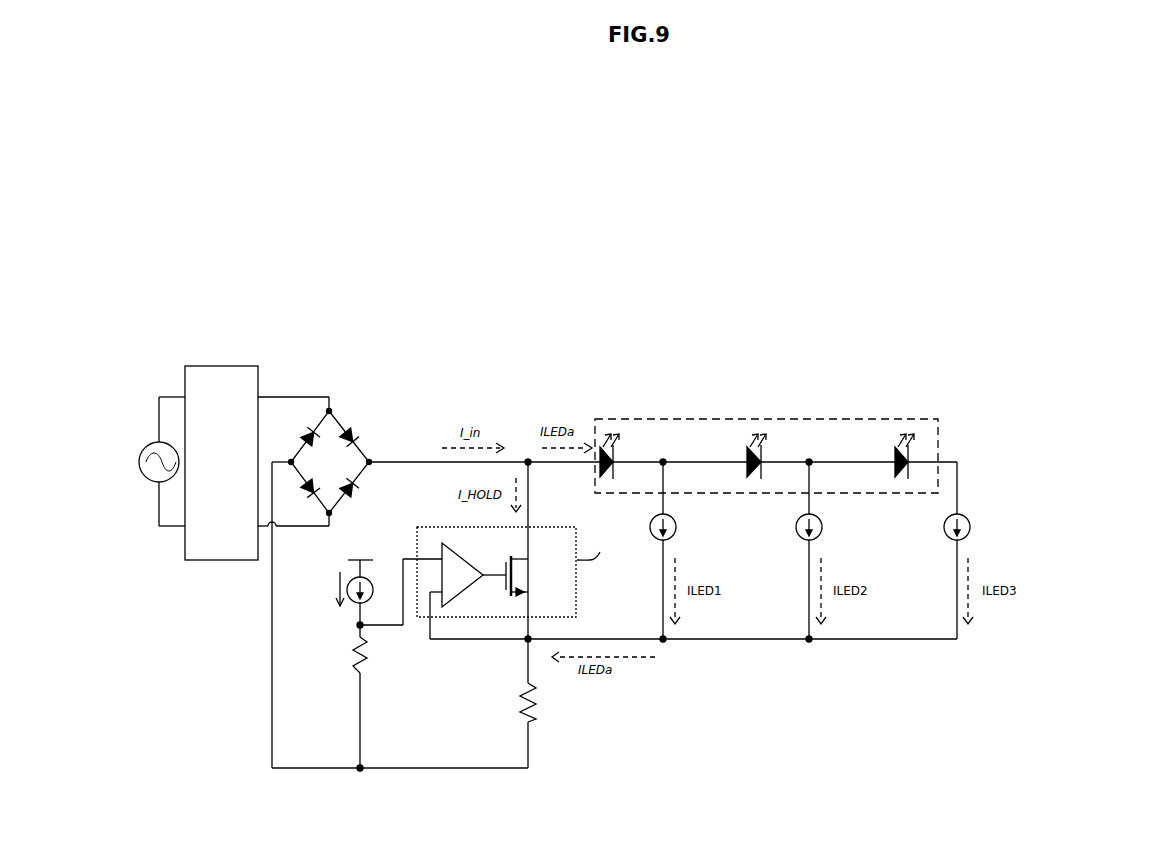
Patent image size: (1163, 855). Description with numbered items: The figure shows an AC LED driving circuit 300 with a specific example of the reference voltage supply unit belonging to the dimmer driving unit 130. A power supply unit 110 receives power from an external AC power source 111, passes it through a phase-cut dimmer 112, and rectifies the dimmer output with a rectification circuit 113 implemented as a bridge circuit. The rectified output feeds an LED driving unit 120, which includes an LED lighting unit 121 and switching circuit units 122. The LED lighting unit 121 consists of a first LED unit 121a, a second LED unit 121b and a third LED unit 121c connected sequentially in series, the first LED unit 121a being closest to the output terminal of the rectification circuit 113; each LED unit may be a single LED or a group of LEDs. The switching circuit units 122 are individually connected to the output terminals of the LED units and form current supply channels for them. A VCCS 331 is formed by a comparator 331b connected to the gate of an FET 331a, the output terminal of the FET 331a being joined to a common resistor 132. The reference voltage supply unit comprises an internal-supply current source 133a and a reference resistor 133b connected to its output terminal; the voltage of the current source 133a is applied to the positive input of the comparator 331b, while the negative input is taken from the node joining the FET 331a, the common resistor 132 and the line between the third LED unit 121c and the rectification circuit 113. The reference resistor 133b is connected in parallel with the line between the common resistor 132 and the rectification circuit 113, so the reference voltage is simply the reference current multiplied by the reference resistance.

The LED lighting apparatus 300 is at (104, 170).
The power supply unit 110 is at (176, 320).
The AC power source 111 is at (140, 476).
The dimmer 112 is at (240, 366).
The rectification circuit 113 is at (329, 411).
The LED driving unit 120 is at (995, 492).
The LED lighting unit 121 is at (803, 419).
The first LED unit 121a is at (616, 458).
The second LED unit 121b is at (763, 458).
The third LED unit 121c is at (908, 457).
The switching circuit units 122 is at (676, 527).
The LED driving control unit 130 is at (308, 615).
The common resistor 132 is at (531, 716).
The current source 133a is at (366, 626).
The resistor 133b is at (357, 676).
The VCCS 331 is at (578, 597).
The FET 331a is at (520, 559).
The comparator 331b is at (453, 553).